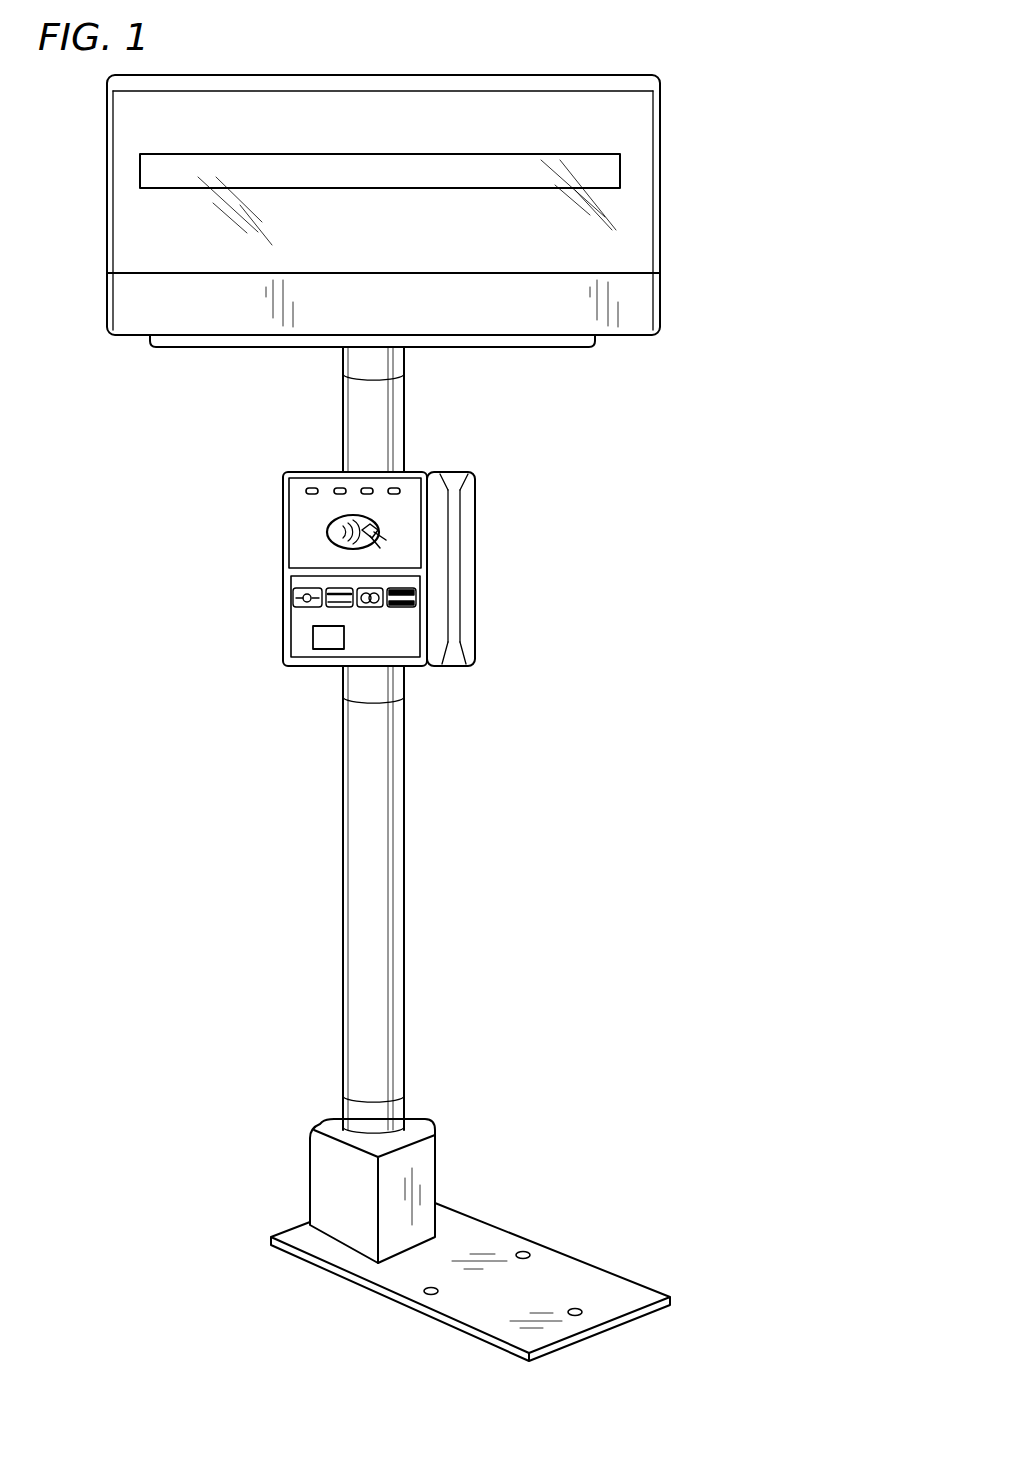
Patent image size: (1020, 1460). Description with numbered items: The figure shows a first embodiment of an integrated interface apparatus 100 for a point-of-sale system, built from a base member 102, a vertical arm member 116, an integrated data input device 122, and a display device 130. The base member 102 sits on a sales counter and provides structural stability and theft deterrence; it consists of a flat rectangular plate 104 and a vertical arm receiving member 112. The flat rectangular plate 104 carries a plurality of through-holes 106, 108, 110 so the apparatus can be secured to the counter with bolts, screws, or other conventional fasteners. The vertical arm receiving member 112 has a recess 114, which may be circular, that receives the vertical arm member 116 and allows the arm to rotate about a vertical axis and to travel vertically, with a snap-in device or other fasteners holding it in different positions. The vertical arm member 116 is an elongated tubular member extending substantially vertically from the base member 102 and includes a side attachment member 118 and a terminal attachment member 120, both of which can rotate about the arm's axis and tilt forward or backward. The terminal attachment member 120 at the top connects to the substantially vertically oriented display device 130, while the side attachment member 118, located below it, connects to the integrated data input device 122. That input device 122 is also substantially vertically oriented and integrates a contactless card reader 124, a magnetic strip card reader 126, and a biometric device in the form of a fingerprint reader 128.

The integrated interface apparatus 100 is at (705, 94).
The base member 102 is at (644, 1183).
The flat rectangular plate 104 is at (620, 1278).
The through-hole 106 is at (530, 1250).
The through-hole 108 is at (584, 1312).
The through-hole 110 is at (423, 1291).
The vertical arm receiving member 112 is at (310, 1172).
The recess 114 is at (405, 1108).
The vertical arm member 116 is at (448, 798).
The side attachment member 118 is at (343, 680).
The terminal attachment member 120 is at (405, 358).
The integrated data input device 122 is at (252, 457).
The contactless card reader 124 is at (283, 518).
The magnetic strip card reader 126 is at (480, 548).
The fingerprint reader 128 is at (313, 637).
The display device 130 is at (662, 163).